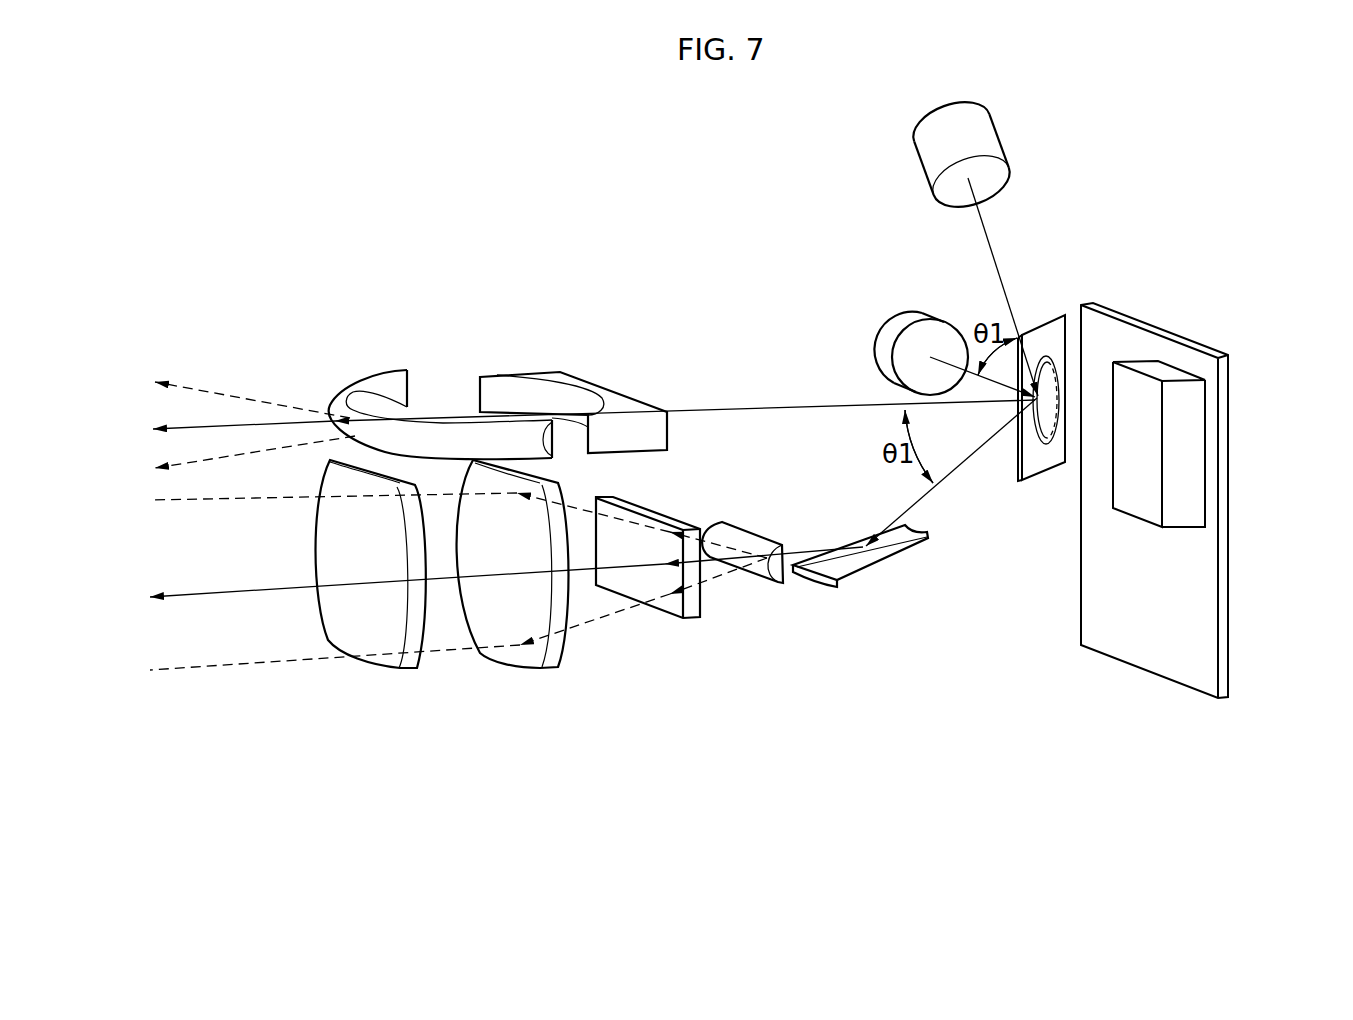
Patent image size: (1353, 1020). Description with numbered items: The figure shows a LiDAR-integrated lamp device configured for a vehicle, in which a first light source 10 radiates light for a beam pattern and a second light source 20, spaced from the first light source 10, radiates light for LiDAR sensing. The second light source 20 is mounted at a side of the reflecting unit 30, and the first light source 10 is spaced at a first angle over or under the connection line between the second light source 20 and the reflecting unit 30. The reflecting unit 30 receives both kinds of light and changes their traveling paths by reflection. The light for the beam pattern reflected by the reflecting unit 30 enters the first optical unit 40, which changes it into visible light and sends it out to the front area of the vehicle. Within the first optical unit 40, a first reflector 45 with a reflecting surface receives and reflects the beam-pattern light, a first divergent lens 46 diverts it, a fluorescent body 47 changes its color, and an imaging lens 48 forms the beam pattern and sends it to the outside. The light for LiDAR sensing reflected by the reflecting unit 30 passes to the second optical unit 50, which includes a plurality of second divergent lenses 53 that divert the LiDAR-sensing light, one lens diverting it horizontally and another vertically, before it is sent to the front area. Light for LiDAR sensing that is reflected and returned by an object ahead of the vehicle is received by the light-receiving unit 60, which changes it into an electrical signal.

The first light source 10 is at (983, 134).
The second light source 20 is at (888, 330).
The reflecting unit 30 is at (1037, 468).
The first optical unit 40 is at (622, 623).
The first reflector 45 is at (860, 602).
The first divergent lens 46 is at (780, 568).
The fluorescent body 47 is at (637, 580).
The imaging lens 48 is at (495, 637).
The second optical unit 50 is at (498, 347).
The second divergent lenses 53 is at (515, 283).
The light-receiving unit 60 is at (1222, 571).